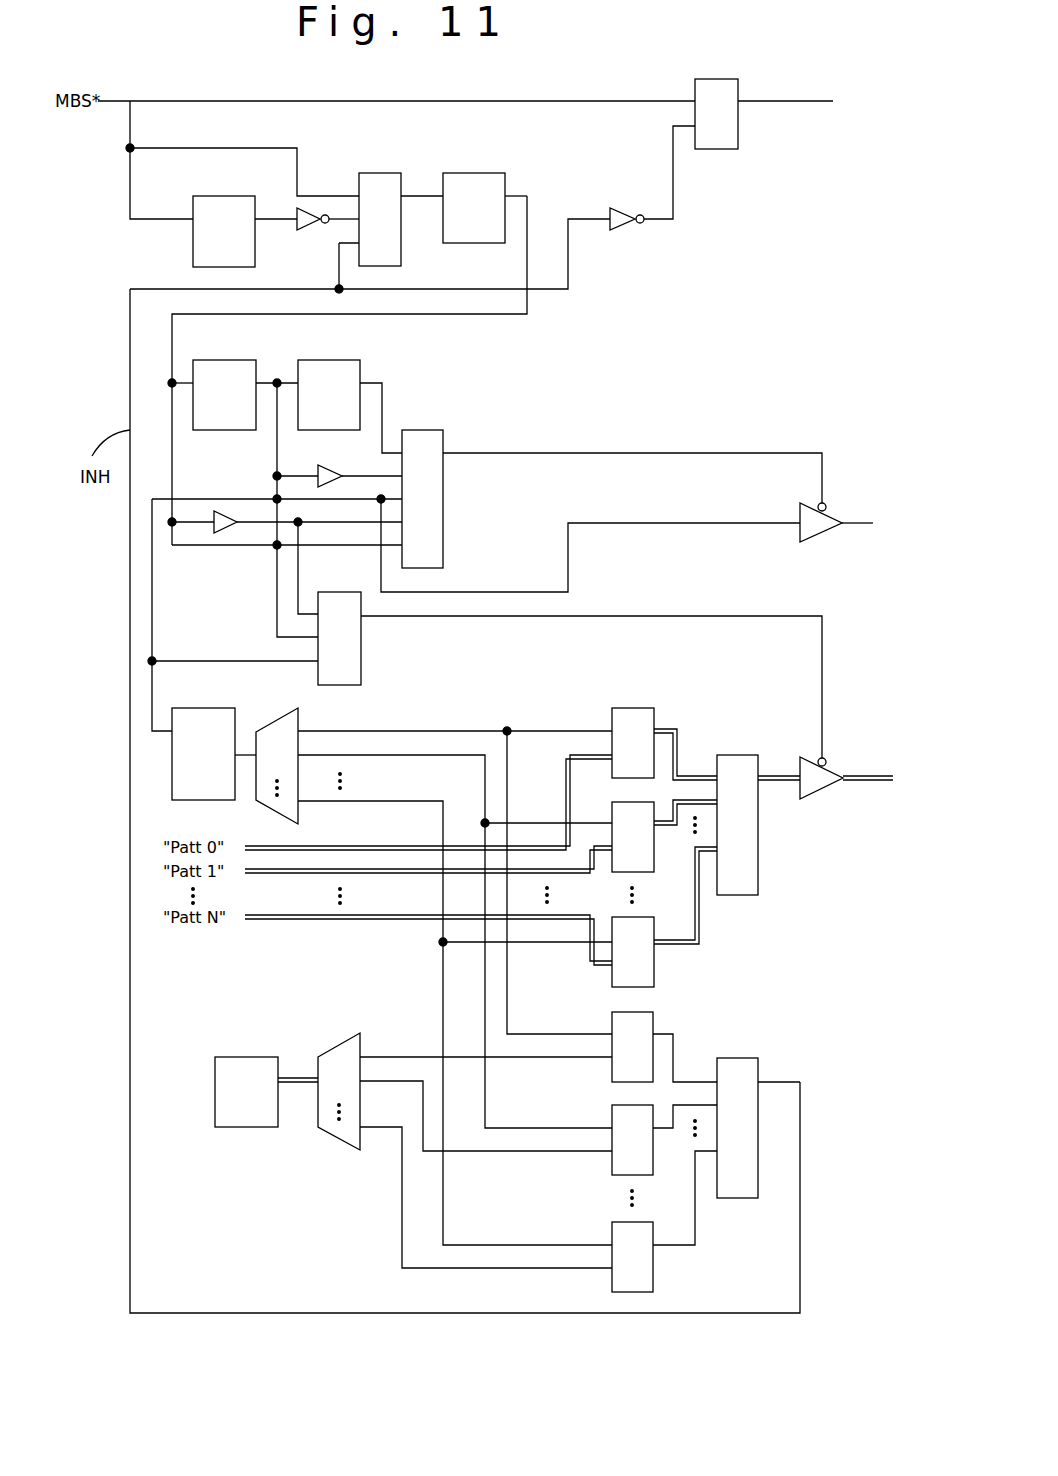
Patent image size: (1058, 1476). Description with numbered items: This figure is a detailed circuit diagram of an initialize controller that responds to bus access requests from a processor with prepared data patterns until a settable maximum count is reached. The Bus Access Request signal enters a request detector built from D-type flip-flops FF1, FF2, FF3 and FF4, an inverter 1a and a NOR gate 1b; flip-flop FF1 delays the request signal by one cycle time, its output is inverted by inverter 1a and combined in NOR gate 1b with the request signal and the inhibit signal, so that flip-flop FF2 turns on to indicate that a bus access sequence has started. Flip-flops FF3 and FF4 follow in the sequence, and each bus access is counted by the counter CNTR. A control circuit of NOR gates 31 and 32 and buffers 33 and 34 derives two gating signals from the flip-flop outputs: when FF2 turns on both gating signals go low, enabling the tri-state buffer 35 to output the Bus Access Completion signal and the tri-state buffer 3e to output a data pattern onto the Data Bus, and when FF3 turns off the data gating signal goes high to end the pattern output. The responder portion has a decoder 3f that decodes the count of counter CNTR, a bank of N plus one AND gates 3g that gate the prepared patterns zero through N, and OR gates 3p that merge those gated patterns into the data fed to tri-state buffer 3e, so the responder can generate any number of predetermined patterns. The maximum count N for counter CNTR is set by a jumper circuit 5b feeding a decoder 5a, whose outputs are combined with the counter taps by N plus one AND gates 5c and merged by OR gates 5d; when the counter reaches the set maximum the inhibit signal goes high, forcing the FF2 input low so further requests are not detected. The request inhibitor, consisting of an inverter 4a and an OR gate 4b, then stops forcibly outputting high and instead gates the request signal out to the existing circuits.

The inverter 1a is at (300, 207).
The NOR gate 1b is at (380, 173).
The inverter 4a is at (620, 243).
The OR gate 4b is at (712, 149).
The NOR gate 31 is at (361, 668).
The NOR gate 32 is at (420, 430).
The buffer 33 is at (220, 512).
The buffer 34 is at (330, 465).
The tri-state buffer 35 is at (820, 545).
The tri-state buffer 3e is at (822, 800).
The decoder 3f is at (278, 718).
The N+1 AND gates 3g is at (630, 690).
The OR gates 3p is at (737, 755).
The decoder 5a is at (340, 1035).
The jumper circuit 5b is at (237, 1057).
The N+1 AND gates 5c is at (673, 1015).
The OR gates 5d is at (737, 1198).
The flip-flop FF1 is at (214, 196).
The flip-flop FF2 is at (463, 173).
The flip-flop FF3 is at (215, 360).
The flip-flop FF4 is at (318, 360).
The counter CNTR is at (193, 800).